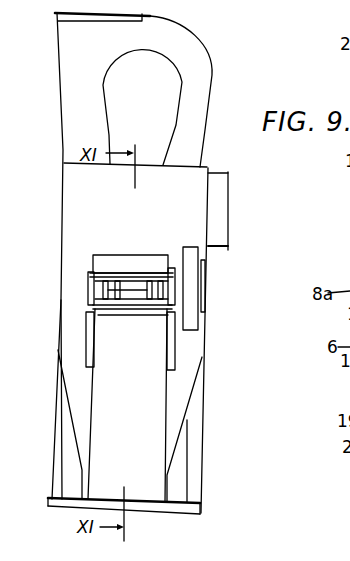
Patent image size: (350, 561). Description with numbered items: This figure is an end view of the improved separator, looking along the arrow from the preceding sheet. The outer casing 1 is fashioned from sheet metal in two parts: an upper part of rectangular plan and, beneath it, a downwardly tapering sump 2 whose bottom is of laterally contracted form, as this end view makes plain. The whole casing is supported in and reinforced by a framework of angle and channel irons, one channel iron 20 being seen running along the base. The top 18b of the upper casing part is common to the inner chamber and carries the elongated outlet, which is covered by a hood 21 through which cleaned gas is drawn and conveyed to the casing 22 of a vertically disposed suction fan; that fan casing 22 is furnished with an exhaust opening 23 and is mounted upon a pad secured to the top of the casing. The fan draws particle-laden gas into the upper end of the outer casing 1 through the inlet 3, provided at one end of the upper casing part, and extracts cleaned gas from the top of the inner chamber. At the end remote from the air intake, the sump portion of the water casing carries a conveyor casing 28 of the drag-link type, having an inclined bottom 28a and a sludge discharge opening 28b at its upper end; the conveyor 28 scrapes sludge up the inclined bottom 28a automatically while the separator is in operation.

The outer casing 1 is at (93, 307).
The sump 2 is at (80, 445).
The inlet 3 is at (218, 238).
The top 18b is at (205, 168).
The channel iron 20 is at (154, 509).
The hood 21 is at (163, 100).
The casing of suction fan 22 is at (197, 76).
The exhaust opening 23 is at (110, 15).
The conveyor casing 28 is at (165, 385).
The inclined bottom 28a is at (142, 417).
The sludge discharge opening 28b is at (133, 305).